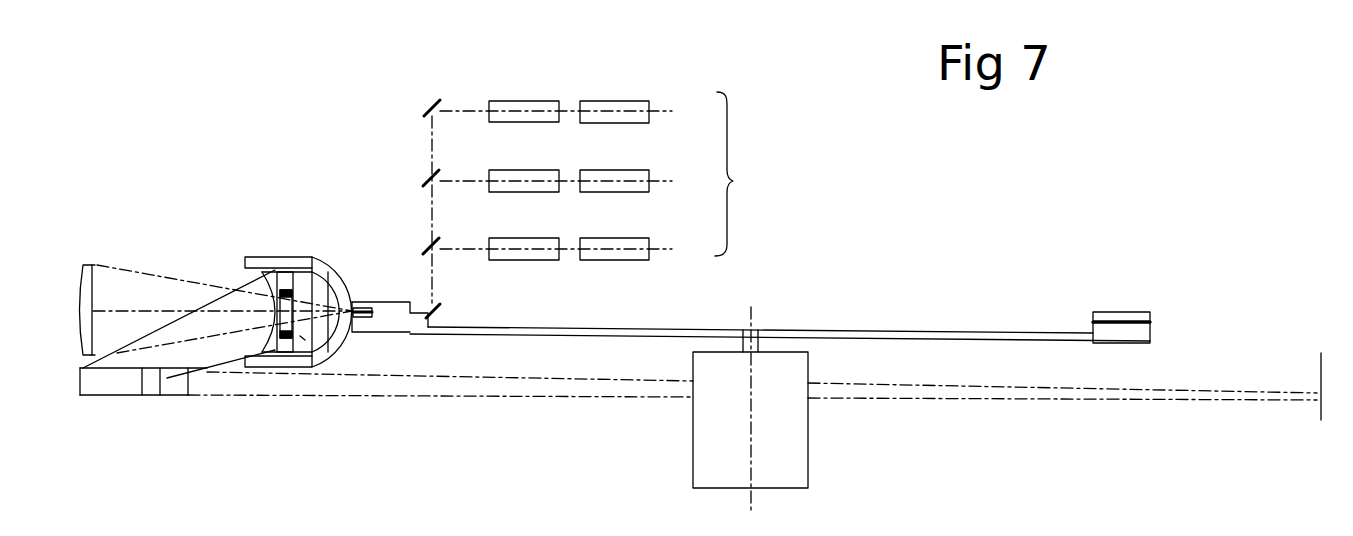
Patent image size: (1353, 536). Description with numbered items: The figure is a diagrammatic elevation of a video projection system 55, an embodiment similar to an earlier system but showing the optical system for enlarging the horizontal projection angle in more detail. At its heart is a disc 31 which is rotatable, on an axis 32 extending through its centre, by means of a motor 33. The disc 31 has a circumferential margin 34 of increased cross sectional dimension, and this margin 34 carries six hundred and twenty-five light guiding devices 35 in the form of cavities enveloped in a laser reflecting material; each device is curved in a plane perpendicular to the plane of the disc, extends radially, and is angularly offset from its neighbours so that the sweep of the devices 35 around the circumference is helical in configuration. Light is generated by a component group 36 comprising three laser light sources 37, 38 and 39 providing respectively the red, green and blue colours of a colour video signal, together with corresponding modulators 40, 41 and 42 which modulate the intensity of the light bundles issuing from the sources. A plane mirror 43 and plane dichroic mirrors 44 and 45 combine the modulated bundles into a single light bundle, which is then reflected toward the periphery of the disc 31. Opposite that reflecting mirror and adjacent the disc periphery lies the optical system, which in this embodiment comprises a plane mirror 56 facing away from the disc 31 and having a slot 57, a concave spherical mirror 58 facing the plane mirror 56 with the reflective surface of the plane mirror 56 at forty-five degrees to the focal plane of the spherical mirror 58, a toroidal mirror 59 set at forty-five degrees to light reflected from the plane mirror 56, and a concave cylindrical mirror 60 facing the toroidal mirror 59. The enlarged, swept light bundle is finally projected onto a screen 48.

The disc 31 is at (957, 333).
The axis 32 is at (752, 315).
The motor 33 is at (808, 458).
The circumferential margin 34 is at (409, 296).
The light guiding devices 35 is at (378, 316).
The component group 36 is at (430, 308).
The laser light source 37 is at (618, 260).
The laser light source 38 is at (607, 192).
The laser light source 39 is at (607, 123).
The modulator 40 is at (515, 260).
The modulator 41 is at (497, 192).
The modulator 42 is at (497, 123).
The plane mirror 43 is at (428, 105).
The plane dichroic mirror 44 is at (428, 177).
The plane dichroic mirror 45 is at (432, 303).
The screen 48 is at (1318, 373).
The video projection system 55 is at (963, 226).
The plane mirror 56 is at (305, 340).
The slot 57 is at (292, 330).
The concave spherical mirror 58 is at (90, 263).
The toroidal mirror 59 is at (287, 256).
The concave cylindrical mirror 60 is at (122, 395).